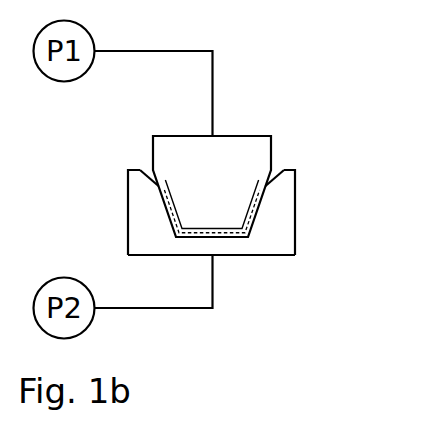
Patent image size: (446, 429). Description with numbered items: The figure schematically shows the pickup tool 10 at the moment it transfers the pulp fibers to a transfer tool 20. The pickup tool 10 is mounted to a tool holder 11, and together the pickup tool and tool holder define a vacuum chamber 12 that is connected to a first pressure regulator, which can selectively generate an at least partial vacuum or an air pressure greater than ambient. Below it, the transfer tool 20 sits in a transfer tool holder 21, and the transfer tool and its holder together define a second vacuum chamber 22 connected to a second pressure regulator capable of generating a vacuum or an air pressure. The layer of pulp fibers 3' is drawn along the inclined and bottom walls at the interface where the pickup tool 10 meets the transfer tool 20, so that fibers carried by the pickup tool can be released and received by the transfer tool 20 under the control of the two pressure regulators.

The pickup tool 10 is at (158, 186).
The tool holder 11 is at (231, 135).
The vacuum chamber 12 is at (238, 162).
The embedded layer 3' is at (235, 256).
The transfer tool 20 is at (266, 215).
The transfer tool holder 21 is at (295, 235).
The vacuum chamber 22 is at (233, 248).